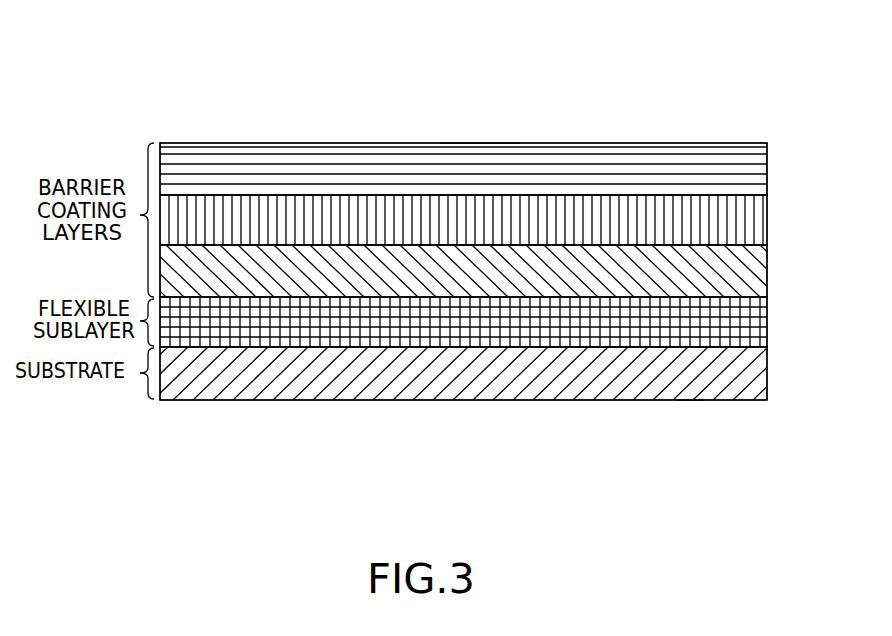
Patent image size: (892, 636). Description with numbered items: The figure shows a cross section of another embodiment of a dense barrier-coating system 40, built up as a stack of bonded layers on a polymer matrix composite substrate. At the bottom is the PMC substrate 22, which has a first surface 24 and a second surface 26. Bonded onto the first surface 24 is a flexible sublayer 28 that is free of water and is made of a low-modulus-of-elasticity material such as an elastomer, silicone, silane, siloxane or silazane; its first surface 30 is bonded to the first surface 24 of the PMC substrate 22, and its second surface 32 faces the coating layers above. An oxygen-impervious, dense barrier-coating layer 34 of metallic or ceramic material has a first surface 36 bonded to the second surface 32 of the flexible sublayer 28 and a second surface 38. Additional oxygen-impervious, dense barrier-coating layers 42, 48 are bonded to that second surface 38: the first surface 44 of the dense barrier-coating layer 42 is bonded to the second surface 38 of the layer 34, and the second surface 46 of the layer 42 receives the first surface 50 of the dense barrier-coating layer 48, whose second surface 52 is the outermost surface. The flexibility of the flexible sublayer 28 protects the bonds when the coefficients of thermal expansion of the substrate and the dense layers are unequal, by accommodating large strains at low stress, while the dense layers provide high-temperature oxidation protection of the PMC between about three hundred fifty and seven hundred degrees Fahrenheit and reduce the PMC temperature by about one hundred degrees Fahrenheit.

The PMC substrate 22 is at (758, 385).
The first surface of the PMC substrate 24 is at (608, 349).
The second surface of the PMC substrate 26 is at (690, 401).
The flexible sublayer 28 is at (758, 329).
The first surface of the flexible sublayer 30 is at (767, 349).
The second surface of the flexible sublayer 32 is at (767, 298).
The oxygen-impervious, dense barrier-coating layer 34 is at (758, 276).
The first surface of the oxygen-impervious, dense barrier-coating layer 36 is at (258, 297).
The second surface of the oxygen-impervious, dense barrier-coating layer 38 is at (307, 245).
The dense barrier-coating system 40 is at (683, 112).
The oxygen-impervious, dense barrier-coating layer 42 is at (758, 226).
The first surface of the oxygen-impervious, dense barrier-coating layer 42 44 is at (767, 246).
The second surface of the oxygen-impervious, dense barrier-coating layer 42 46 is at (767, 195).
The oxygen-impervious, dense barrier-coating layer 48 is at (759, 172).
The first surface of the oxygen-impervious, dense barrier-coating layer 48 50 is at (553, 193).
The second surface of the oxygen-impervious, dense barrier-coating layer 48 52 is at (473, 143).